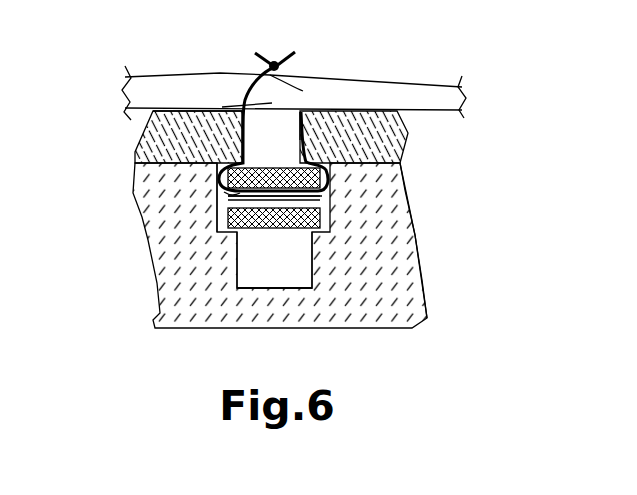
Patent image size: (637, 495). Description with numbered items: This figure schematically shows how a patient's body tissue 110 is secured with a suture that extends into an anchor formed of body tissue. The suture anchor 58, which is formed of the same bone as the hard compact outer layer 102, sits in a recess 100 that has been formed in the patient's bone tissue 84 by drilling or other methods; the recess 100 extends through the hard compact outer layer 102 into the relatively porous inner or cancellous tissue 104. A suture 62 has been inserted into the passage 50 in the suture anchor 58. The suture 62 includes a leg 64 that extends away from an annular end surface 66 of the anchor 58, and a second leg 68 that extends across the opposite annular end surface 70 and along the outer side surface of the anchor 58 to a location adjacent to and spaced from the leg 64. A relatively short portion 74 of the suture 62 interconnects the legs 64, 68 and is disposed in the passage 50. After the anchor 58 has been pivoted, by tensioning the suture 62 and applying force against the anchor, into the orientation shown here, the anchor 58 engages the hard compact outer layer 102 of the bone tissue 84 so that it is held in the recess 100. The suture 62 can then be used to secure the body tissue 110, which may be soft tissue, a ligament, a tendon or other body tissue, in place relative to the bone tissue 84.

The passage 50 is at (280, 200).
The suture anchor 58 is at (263, 232).
The suture 62 is at (284, 64).
The leg 64 is at (235, 128).
The annular end surface 66 is at (228, 216).
The leg 68 is at (301, 135).
The annular end surface 70 is at (312, 221).
The short portion 74 is at (217, 198).
The bone tissue 84 is at (415, 237).
The recess 100 is at (293, 288).
The hard compact outer layer 102 is at (409, 135).
The cancellous tissue 104 is at (406, 294).
The body tissue 110 is at (185, 86).